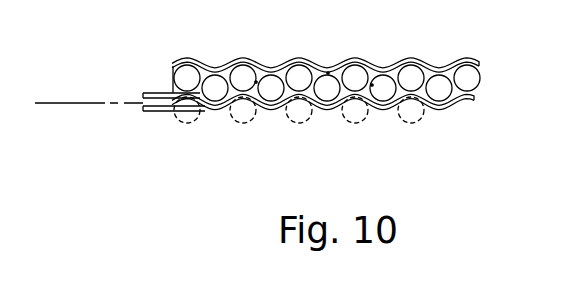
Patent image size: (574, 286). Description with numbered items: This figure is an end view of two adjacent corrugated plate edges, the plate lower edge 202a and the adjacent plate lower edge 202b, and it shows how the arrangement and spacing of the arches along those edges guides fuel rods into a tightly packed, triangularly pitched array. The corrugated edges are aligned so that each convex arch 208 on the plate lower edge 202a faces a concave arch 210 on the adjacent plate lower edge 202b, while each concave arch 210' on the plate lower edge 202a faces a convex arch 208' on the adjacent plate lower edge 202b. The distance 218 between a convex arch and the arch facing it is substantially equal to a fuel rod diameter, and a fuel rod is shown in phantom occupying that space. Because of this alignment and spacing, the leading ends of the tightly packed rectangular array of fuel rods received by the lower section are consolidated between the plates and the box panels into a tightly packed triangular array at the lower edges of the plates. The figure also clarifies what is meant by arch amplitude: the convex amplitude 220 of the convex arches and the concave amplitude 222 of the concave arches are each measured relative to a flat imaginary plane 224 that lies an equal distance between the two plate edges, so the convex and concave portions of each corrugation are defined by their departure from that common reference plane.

The plate lower edge 202a is at (443, 114).
The adjacent plate lower edge 202b is at (398, 50).
The convex arch 208 is at (327, 124).
The convex arch 208' is at (327, 50).
The concave arch 210 is at (298, 42).
The concave arch 210' is at (346, 129).
The distance 218 is at (255, 82).
The convex amplitude 220 is at (144, 97).
The concave amplitude 222 is at (144, 107).
The flat imaginary plane 224 is at (72, 102).